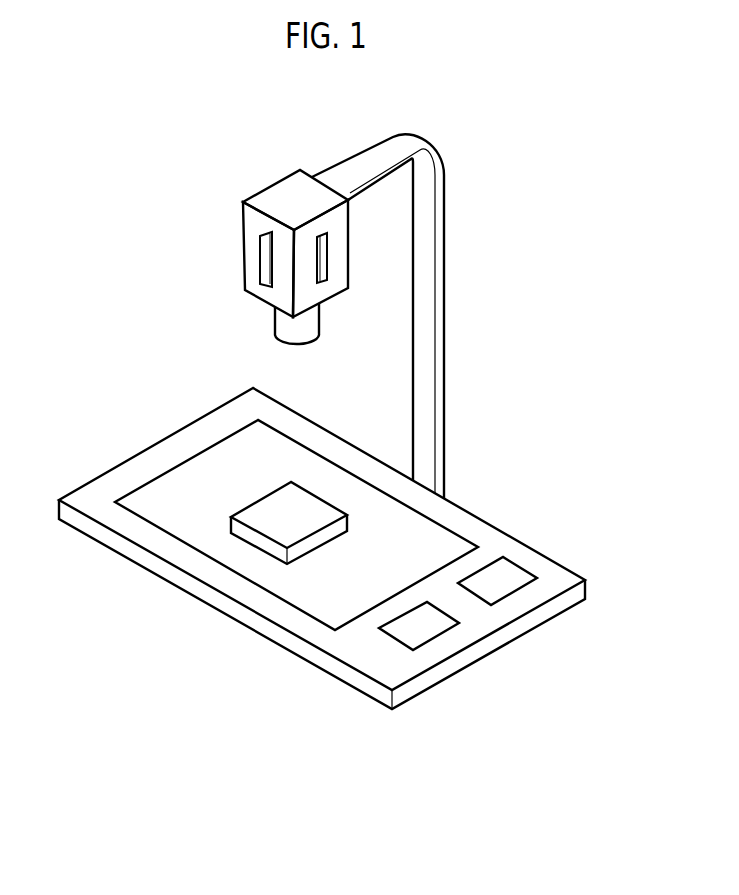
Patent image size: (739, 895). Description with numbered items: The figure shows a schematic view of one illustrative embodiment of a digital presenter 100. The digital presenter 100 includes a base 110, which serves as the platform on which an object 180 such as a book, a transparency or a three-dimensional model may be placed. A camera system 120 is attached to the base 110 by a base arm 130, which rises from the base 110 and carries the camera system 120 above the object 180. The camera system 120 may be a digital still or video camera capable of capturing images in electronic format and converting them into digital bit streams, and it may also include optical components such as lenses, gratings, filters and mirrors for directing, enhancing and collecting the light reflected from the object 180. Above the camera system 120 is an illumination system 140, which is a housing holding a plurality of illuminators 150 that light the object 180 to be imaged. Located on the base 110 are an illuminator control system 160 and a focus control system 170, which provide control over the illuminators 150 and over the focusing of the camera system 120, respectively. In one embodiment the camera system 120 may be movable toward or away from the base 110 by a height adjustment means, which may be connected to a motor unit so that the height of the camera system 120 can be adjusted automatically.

The digital presenter 100 is at (116, 246).
The base 110 is at (518, 548).
The camera system 120 is at (283, 330).
The base arm 130 is at (442, 327).
The illumination system 140 is at (280, 182).
The illuminators 150 is at (262, 246).
The illuminator control system 160 is at (423, 633).
The focus control system 170 is at (505, 587).
The object 180 is at (268, 528).